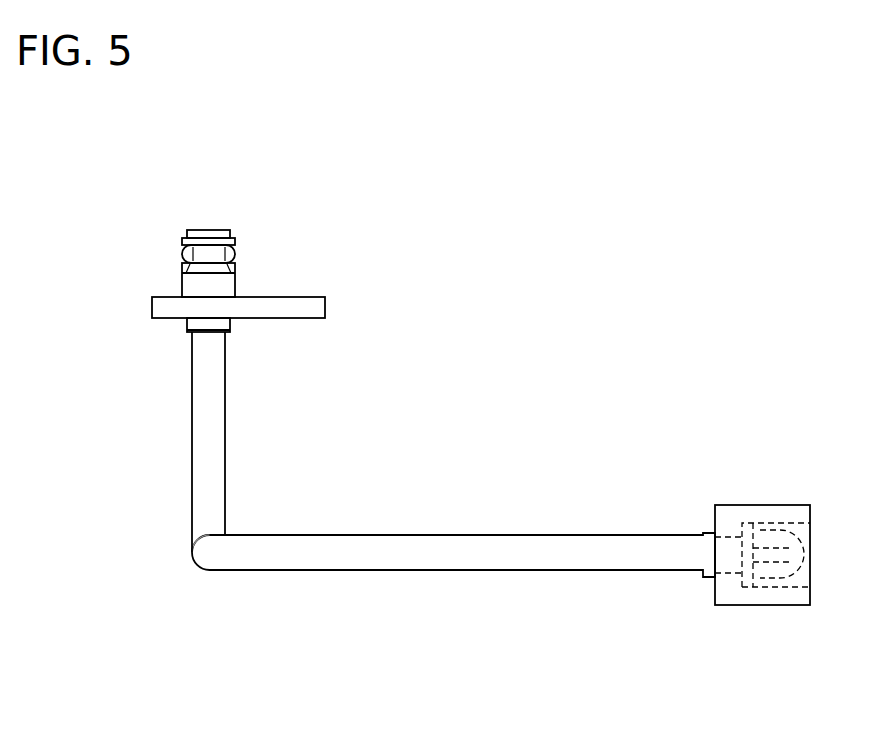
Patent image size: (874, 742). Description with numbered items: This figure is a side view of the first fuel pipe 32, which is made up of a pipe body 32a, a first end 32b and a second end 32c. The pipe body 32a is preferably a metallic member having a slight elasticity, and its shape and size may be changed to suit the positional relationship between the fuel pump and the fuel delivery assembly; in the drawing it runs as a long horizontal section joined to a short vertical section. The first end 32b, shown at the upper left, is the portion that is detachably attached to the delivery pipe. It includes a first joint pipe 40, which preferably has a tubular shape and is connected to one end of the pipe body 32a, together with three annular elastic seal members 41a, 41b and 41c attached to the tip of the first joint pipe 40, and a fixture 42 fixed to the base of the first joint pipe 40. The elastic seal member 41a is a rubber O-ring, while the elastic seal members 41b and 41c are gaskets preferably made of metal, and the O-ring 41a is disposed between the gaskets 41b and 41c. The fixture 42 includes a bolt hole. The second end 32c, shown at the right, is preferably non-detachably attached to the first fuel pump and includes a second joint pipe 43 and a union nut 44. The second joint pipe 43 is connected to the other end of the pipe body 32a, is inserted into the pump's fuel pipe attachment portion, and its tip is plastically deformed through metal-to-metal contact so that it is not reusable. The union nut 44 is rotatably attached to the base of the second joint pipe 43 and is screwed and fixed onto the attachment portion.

The first fuel pipe 32 is at (470, 422).
The pipe body 32a is at (452, 535).
The first end 32b is at (172, 212).
The second end 32c is at (745, 561).
The first joint pipe 40 is at (217, 230).
The elastic seal member 41a is at (182, 254).
The elastic seal member 41b is at (182, 267).
The elastic seal member 41c is at (182, 241).
The fixture 42 is at (325, 310).
The second joint pipe 43 is at (773, 525).
The union nut 44 is at (737, 605).